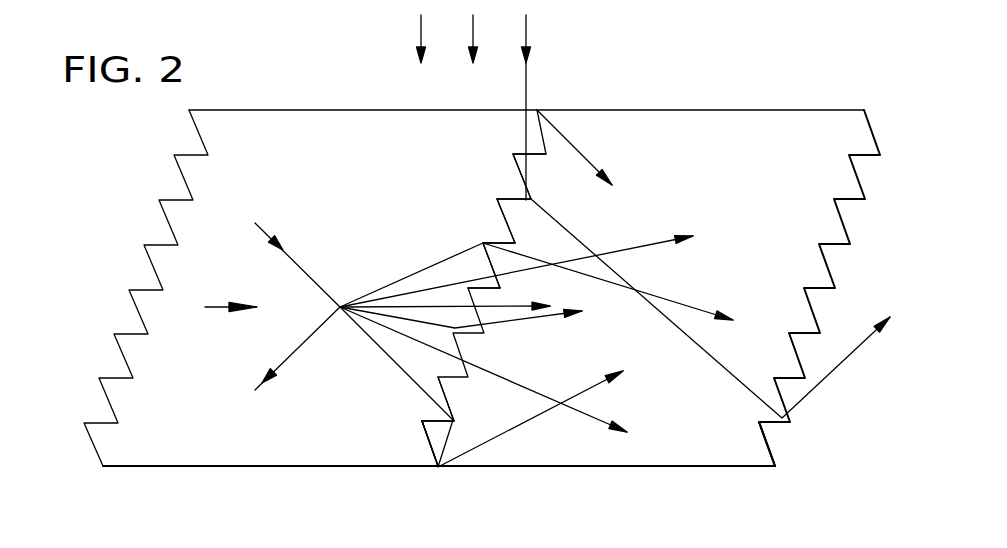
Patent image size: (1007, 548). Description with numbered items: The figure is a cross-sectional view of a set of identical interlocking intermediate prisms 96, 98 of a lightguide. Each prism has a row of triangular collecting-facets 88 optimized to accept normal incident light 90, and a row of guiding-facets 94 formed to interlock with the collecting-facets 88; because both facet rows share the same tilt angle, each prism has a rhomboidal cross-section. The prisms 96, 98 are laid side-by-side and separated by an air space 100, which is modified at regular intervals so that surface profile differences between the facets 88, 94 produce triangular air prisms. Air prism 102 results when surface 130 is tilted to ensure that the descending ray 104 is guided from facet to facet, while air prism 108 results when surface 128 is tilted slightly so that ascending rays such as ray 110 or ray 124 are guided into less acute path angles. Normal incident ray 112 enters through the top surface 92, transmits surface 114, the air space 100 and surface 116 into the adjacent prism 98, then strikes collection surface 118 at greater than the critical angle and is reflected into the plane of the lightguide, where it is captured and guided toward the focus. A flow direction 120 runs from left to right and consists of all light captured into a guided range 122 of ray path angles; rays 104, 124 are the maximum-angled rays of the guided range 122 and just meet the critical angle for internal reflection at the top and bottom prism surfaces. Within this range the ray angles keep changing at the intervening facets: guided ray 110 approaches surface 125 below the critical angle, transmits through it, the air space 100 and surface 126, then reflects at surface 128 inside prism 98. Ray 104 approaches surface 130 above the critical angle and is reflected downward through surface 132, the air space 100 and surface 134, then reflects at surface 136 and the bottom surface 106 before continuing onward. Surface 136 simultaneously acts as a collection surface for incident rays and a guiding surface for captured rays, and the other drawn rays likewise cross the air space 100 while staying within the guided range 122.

The collecting-facets 88 is at (482, 289).
The normal incident light 90 is at (459, 49).
The top surface 92 is at (362, 108).
The guiding-facets 94 is at (418, 455).
The intermediate prism 96 is at (352, 153).
The intermediate prism 98 is at (766, 153).
The air space 100 is at (438, 468).
The air prism 102 is at (471, 397).
The descending ray 104 is at (249, 227).
The bottom surface 106 is at (600, 468).
The air prism 108 is at (483, 243).
The guided ray 110 is at (423, 270).
The normal incident ray 112 is at (526, 33).
The surface 114 is at (520, 155).
The surface 116 is at (530, 158).
The collection surface 118 is at (536, 200).
The flow direction 120 is at (199, 317).
The guided range 122 is at (317, 317).
The ray 124 is at (247, 413).
The surface 125 is at (512, 266).
The surface 126 is at (512, 266).
The surface 128 is at (516, 246).
The surface 130 is at (440, 393).
The surface 132 is at (428, 418).
The surface 134 is at (422, 425).
The surface 136 is at (432, 440).